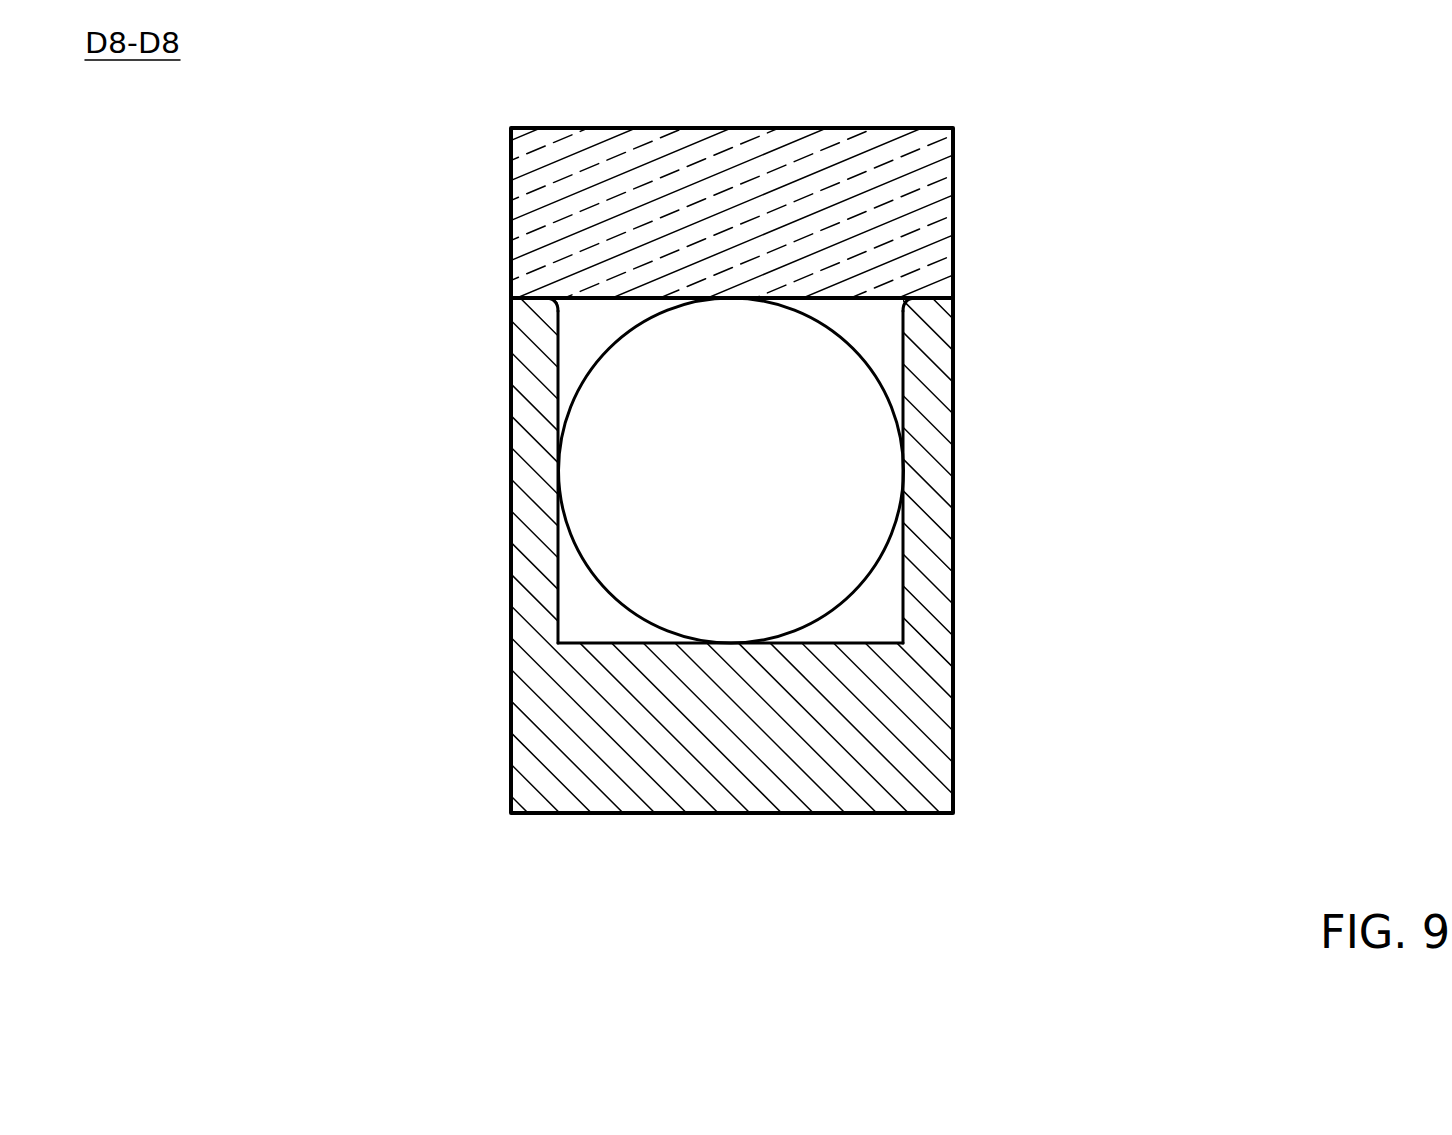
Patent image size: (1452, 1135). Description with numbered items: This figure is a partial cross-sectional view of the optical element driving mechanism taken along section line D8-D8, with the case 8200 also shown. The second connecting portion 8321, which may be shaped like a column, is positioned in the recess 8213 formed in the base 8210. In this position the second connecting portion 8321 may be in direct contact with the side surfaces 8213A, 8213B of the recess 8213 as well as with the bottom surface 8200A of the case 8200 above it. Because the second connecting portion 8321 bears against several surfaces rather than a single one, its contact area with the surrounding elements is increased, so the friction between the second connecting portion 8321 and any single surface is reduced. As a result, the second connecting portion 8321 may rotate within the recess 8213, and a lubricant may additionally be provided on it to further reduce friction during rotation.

The case 8200 is at (731, 193).
The bottom surface 8200A is at (870, 300).
The base 8210 is at (732, 747).
The recess 8213 is at (591, 621).
The side surface 8213A is at (560, 350).
The side surface 8213B is at (882, 640).
The second connecting portion 8321 is at (710, 471).